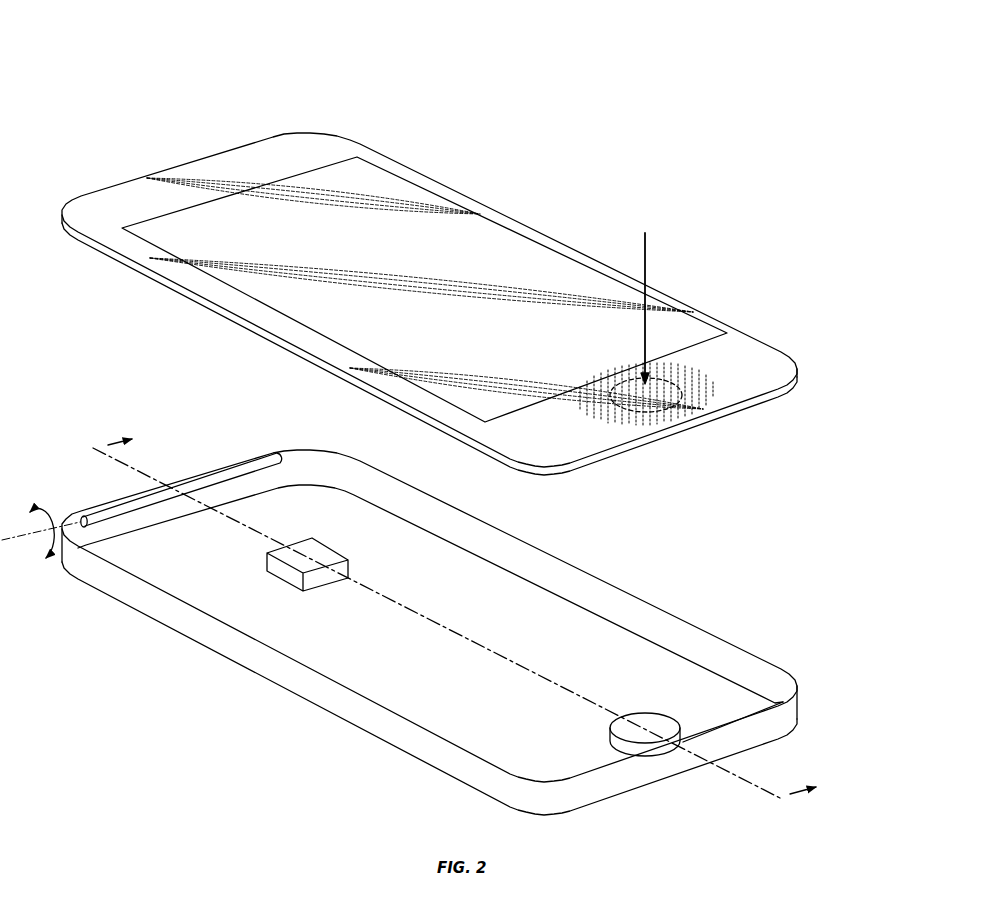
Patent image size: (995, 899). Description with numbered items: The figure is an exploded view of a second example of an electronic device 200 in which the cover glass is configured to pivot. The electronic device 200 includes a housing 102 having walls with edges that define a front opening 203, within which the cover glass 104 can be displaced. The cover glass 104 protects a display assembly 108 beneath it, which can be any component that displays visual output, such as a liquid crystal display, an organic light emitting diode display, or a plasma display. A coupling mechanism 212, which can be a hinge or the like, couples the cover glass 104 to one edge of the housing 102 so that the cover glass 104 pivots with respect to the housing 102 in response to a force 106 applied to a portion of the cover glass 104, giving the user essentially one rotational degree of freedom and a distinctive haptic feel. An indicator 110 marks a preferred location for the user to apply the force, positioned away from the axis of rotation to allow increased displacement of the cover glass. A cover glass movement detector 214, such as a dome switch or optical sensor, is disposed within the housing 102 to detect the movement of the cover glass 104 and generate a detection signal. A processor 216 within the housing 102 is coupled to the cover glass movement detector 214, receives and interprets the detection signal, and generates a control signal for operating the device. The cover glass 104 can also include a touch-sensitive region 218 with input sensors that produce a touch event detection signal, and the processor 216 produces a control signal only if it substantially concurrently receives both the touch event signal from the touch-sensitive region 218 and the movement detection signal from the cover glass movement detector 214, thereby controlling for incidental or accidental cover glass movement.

The electronic device 200 is at (112, 88).
The cover glass 104 is at (301, 132).
The display assembly 108 is at (407, 195).
The force 106 is at (647, 252).
The indicator 110 is at (667, 409).
The touch-sensitive region 218 is at (630, 424).
The housing 102 is at (790, 722).
The front opening 203 is at (673, 612).
The coupling mechanism 212 is at (235, 470).
The processor 216 is at (283, 578).
The cover glass movement detector 214 is at (643, 752).